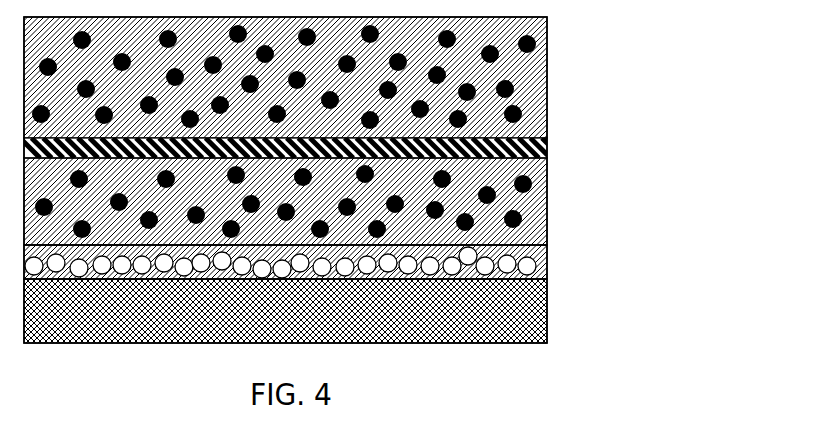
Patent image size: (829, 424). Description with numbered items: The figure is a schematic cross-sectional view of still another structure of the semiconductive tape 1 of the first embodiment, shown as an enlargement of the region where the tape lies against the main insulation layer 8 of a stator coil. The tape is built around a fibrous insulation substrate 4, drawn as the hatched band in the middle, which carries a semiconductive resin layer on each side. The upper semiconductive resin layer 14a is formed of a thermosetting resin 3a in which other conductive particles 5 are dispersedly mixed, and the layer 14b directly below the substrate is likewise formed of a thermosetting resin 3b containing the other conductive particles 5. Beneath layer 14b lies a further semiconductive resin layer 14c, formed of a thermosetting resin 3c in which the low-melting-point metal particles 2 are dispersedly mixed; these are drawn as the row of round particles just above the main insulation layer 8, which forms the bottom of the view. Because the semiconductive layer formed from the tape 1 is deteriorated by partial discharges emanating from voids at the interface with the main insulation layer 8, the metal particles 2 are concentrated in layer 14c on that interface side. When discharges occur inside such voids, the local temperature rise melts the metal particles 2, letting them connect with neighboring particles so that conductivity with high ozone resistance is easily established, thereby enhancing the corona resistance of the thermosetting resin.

The semiconductive tape 1 is at (720, 22).
The metal particles 2 is at (547, 258).
The thermosetting resin 3a is at (547, 85).
The thermosetting resin 3b is at (547, 218).
The thermosetting resin 3c is at (547, 270).
The fibrous insulation substrate 4 is at (547, 147).
The other conductive particles 5 is at (547, 42).
The main insulation layer 8 is at (547, 310).
The semiconductive resin layer 14a is at (635, 20).
The semiconductive resin layer 14b is at (635, 165).
The semiconductive resin layer 14c is at (635, 249).